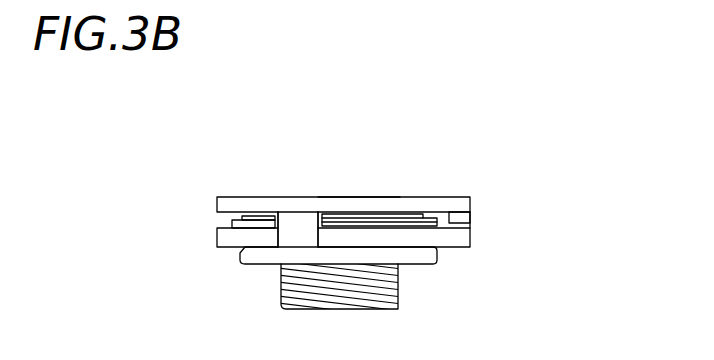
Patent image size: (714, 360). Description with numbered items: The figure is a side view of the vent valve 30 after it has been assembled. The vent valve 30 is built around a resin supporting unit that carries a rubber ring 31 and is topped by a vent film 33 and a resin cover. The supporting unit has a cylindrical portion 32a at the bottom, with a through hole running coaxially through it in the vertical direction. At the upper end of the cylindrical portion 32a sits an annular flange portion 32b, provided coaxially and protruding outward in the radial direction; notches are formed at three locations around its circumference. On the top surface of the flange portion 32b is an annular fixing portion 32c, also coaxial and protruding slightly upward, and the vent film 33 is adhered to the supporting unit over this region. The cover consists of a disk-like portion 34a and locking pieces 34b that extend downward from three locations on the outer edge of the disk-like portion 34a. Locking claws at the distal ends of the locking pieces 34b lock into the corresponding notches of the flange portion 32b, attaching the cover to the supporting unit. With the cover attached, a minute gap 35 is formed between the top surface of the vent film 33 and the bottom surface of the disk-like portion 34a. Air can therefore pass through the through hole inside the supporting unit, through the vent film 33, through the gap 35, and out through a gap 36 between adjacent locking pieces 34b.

The vent valve 30 is at (530, 155).
The rubber ring 31 is at (438, 257).
The cylindrical portion 32a is at (398, 290).
The annular flange portion 32b is at (471, 238).
The annular fixing portion 32c is at (437, 223).
The vent film 33 is at (407, 215).
The disk-like portion 34a is at (358, 196).
The locking pieces 34b is at (295, 233).
The gap 35 is at (393, 213).
The gap 36 is at (222, 220).